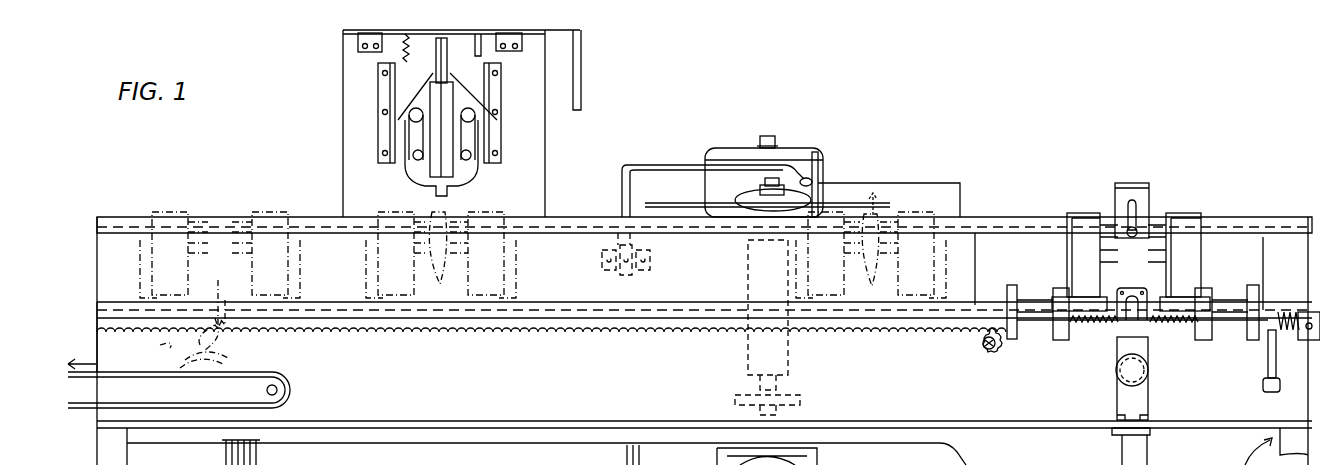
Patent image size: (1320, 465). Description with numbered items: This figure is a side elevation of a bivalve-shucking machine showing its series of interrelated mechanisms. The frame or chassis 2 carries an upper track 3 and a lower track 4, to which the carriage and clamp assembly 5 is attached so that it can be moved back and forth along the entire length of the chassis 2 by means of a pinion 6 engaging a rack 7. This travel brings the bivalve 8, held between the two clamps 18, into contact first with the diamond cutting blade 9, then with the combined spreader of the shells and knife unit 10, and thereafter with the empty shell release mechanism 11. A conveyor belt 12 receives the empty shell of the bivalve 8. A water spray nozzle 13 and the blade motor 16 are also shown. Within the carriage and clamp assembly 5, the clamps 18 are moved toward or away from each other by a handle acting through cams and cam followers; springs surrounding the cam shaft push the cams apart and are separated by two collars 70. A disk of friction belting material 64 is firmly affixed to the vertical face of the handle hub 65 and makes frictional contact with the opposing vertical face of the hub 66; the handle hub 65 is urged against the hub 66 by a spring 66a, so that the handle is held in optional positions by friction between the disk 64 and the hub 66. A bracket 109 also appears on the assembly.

The frame or chassis 2 is at (1205, 400).
The upper track 3 is at (1290, 222).
The lower track 4 is at (877, 318).
The carriage and clamp assembly 5 is at (1178, 333).
The pinion 6 is at (996, 354).
The rack 7 is at (946, 333).
The bivalve 8 is at (432, 212).
The diamond cutting blade 9 is at (874, 206).
The combined spreader of the shells and knife unit 10 is at (443, 124).
The empty shell release mechanism 11 is at (137, 316).
The conveyor belt 12 is at (258, 372).
The water spray nozzle 13 is at (800, 175).
The blade motor 16 is at (730, 148).
The clamp 18 is at (262, 212).
The disk of friction belting material 64 is at (1266, 340).
The handle hub 65 is at (1277, 340).
The hub 66 is at (1247, 300).
The spring 66a is at (1290, 312).
The collars 70 is at (1140, 335).
The bracket 109 is at (1130, 183).